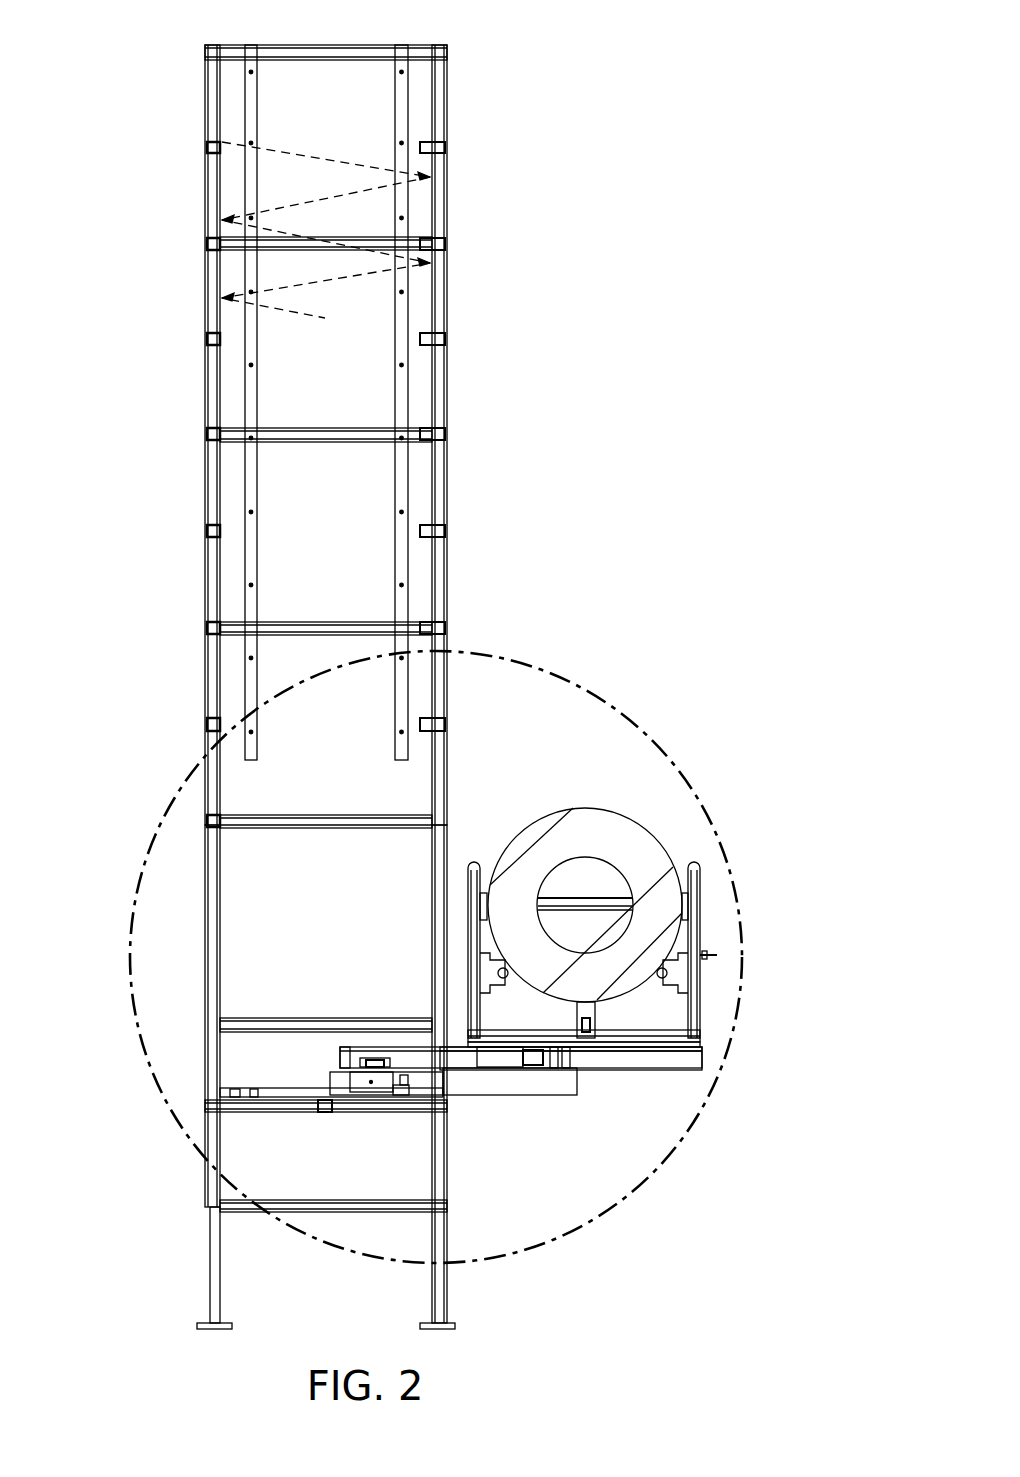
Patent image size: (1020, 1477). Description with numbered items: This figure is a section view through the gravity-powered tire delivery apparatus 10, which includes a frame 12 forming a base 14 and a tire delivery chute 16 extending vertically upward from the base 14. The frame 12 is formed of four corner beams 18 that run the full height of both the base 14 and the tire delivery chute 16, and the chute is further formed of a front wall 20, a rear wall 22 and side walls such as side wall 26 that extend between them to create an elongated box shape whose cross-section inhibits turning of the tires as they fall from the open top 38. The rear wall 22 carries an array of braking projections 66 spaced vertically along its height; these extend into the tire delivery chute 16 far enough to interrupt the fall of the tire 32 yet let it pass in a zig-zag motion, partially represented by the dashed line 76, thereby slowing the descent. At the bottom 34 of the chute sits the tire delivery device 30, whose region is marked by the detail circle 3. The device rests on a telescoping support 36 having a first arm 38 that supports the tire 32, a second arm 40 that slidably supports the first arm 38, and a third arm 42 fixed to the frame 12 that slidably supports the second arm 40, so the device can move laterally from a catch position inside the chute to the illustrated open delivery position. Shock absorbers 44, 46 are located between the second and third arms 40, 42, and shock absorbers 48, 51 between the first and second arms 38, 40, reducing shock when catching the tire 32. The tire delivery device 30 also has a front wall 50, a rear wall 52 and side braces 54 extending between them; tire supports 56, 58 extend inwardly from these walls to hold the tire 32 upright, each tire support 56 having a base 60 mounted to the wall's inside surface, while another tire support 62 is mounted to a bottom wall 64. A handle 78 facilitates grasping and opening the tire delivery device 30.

The gravity-powered tire delivery apparatus 10 is at (395, 680).
The frame 12 is at (205, 832).
The base 14 is at (182, 1170).
The tire delivery chute 16 is at (185, 389).
The corner beams 18 is at (447, 1153).
The front wall 20 is at (447, 410).
The rear wall 22 is at (205, 295).
The side wall 26 is at (390, 332).
The tire delivery device 30 is at (502, 996).
The tire 32 is at (583, 808).
The bottom 34 is at (312, 1114).
The telescoping support 36 is at (461, 1109).
The first arm 38 is at (216, 44).
The second arm 40 is at (560, 1090).
The third arm 42 is at (290, 1086).
The shock absorber 44 is at (242, 1088).
The shock absorber 46 is at (393, 1095).
The shock absorber 48 is at (375, 1058).
The front wall 50 is at (700, 895).
The shock absorber 51 is at (525, 1070).
The rear wall 52 is at (470, 872).
The side braces 54 is at (578, 905).
The tire support 56 is at (487, 962).
The tire support 58 is at (685, 970).
The base 60 is at (490, 985).
The tire support 62 is at (577, 1022).
The bottom wall 64 is at (643, 1030).
The braking projections 66 is at (207, 148).
The dashed line 76 is at (322, 157).
The handle 78 is at (708, 955).
The detail circle 3 is at (592, 692).